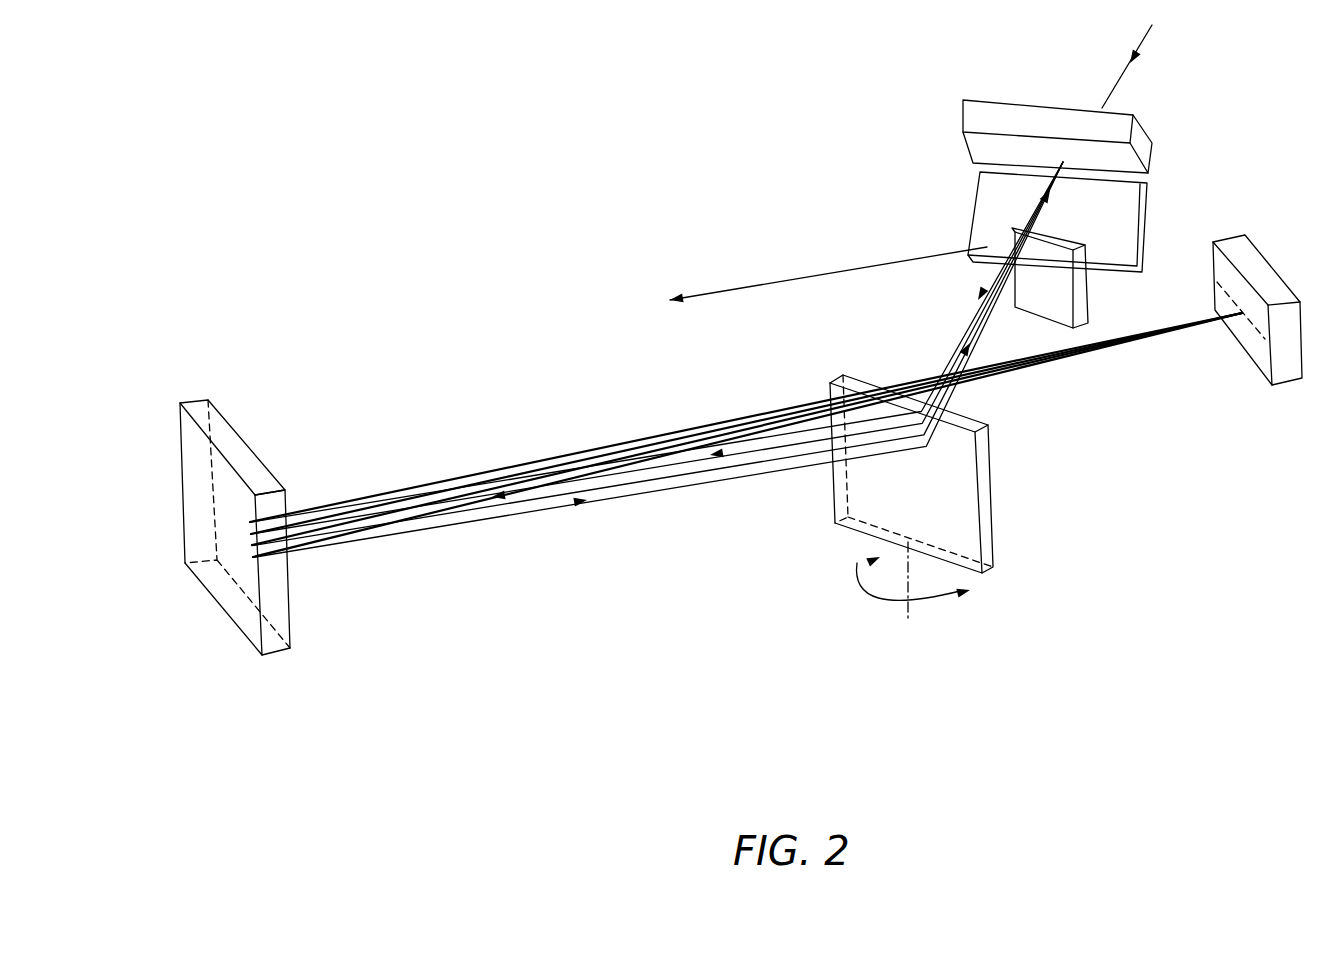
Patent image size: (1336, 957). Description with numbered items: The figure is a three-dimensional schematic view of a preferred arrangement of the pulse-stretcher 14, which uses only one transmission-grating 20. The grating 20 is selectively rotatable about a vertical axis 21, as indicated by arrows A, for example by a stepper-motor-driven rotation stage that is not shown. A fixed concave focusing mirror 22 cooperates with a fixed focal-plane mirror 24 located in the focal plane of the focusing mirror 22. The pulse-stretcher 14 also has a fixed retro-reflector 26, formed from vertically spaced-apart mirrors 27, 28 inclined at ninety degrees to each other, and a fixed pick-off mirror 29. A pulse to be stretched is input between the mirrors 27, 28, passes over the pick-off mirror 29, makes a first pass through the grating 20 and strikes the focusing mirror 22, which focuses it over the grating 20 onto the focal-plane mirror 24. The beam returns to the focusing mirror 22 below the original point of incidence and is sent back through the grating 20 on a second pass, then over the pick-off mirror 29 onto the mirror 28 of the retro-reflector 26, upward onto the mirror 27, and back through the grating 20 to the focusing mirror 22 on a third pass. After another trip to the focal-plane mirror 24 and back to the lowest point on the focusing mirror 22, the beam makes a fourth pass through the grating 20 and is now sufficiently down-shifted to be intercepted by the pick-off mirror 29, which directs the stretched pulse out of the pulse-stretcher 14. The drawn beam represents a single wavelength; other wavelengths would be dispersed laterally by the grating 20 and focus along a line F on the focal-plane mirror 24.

The pulse-stretcher 14 is at (997, 727).
The transmission-grating 20 is at (987, 502).
The vertical axis 21 is at (912, 613).
The concave focusing mirror 22 is at (293, 590).
The focal-plane mirror 24 is at (1248, 358).
The retro-reflector 26 is at (1057, 186).
The mirror 27 is at (977, 145).
The mirror 28 is at (978, 217).
The pick-off mirror 29 is at (1080, 295).
The arrows A is at (903, 574).
The line F is at (1242, 313).